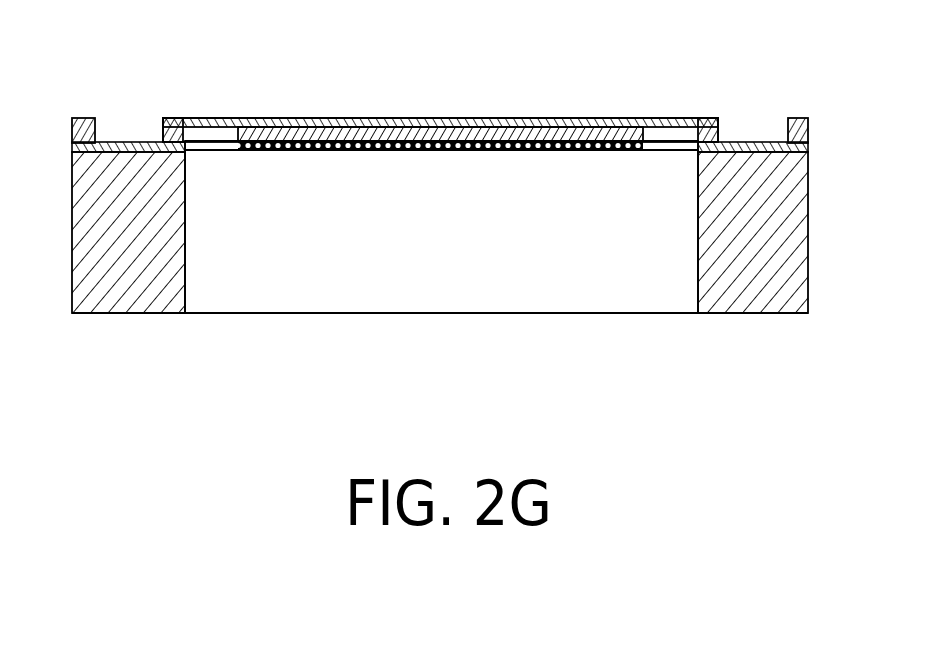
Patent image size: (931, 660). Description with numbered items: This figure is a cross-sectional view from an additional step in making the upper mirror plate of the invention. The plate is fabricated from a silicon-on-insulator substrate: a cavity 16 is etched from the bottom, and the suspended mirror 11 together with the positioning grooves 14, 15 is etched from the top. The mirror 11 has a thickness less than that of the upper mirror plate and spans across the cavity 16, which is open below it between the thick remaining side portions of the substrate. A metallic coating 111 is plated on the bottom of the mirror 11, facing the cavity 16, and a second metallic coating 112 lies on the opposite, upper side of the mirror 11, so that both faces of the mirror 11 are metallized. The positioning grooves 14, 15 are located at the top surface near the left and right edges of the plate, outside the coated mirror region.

The mirror 11 is at (498, 120).
The positioning groove 14 is at (752, 142).
The positioning groove 15 is at (128, 142).
The cavity 16 is at (592, 264).
The metallic coating 111 is at (393, 150).
The metallic coating 112 is at (359, 118).